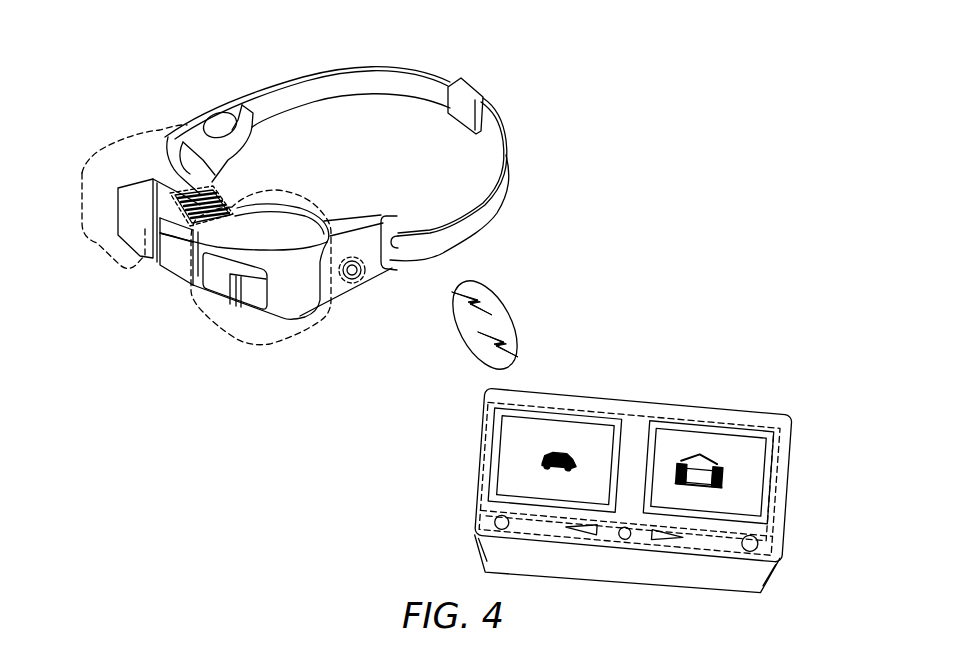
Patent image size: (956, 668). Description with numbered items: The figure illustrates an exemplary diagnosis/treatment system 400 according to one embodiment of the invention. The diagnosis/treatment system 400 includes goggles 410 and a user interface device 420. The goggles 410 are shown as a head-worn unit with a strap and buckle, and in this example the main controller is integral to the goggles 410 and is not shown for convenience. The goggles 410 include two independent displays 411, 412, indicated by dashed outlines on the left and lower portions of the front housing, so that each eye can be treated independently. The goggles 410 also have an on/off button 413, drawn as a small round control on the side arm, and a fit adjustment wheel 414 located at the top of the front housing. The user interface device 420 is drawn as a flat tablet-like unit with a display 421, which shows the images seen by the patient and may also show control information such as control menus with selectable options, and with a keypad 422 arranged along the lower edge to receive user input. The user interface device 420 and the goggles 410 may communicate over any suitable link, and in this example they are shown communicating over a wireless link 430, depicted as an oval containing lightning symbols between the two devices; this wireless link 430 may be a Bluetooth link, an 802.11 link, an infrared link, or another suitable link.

The diagnosis/treatment system 400 is at (608, 55).
The goggles 410 is at (211, 80).
The display 411 is at (110, 250).
The display 412 is at (217, 323).
The on/off button 413 is at (360, 279).
The fit adjustment wheel 414 is at (232, 194).
The user interface device 420 is at (774, 393).
The display 421 is at (790, 432).
The keypad 422 is at (772, 540).
The wireless link 430 is at (512, 298).